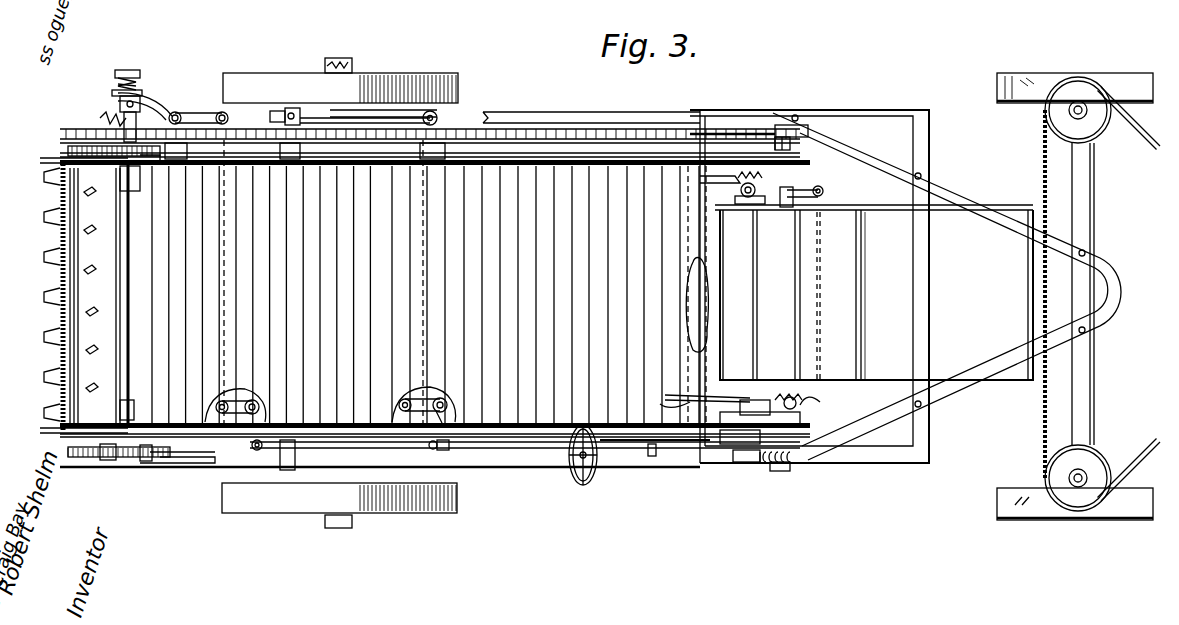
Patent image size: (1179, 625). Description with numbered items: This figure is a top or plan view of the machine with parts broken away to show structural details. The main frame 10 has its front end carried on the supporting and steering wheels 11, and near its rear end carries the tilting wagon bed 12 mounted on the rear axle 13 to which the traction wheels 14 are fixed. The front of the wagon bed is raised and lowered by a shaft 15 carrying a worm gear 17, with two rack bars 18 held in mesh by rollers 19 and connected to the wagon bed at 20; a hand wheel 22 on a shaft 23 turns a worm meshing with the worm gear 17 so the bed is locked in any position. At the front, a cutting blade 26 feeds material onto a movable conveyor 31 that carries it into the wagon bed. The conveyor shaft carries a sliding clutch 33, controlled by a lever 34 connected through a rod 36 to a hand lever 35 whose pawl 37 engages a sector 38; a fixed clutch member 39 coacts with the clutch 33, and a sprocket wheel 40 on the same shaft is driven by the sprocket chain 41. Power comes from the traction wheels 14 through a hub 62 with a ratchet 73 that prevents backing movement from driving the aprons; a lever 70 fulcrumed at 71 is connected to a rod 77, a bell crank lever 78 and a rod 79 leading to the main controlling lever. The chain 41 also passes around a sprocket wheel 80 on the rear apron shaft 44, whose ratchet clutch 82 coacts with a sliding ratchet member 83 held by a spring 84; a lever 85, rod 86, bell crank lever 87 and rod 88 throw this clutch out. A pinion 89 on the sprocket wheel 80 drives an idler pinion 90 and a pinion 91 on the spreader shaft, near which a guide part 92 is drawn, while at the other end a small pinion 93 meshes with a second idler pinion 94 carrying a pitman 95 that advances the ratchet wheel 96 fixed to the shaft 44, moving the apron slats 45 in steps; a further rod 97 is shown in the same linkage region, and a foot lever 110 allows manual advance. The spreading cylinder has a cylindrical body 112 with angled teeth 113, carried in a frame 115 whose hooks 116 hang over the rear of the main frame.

The main frame 10 is at (596, 115).
The supporting and steering wheels 11 is at (1078, 296).
The tilting wagon bed 12 is at (561, 166).
The rear axle 13 is at (336, 530).
The traction wheels 14 is at (340, 293).
The shaft 15 is at (790, 145).
The worm gear 17 is at (766, 462).
The rack bars 18 is at (742, 456).
The rollers 19 is at (762, 400).
The connection point of rack bars to wagon bed 20 is at (726, 442).
The hand wheel 22 is at (583, 488).
The shaft 23 is at (684, 455).
The cutting blade 26 is at (876, 295).
The movable conveyor 31 is at (864, 338).
The clutch 33 is at (740, 190).
The lever 34 is at (822, 195).
The hand lever 35 is at (672, 392).
The rod 36 is at (832, 208).
The pawl 37 is at (677, 400).
The sector 38 is at (805, 405).
The clutch member 39 is at (782, 125).
The sprocket wheel 40 is at (843, 136).
The sprocket chain 41 is at (722, 128).
The rear apron shaft 44 is at (125, 75).
The apron slats 45 is at (435, 283).
The hub 62 is at (330, 62).
The lever 70 is at (412, 115).
The fulcrum 71 is at (290, 112).
The ratchet 73 is at (358, 66).
The rod 77 is at (450, 120).
The bell crank lever 78 is at (416, 410).
The rod 79 is at (526, 445).
The sprocket wheel 80 is at (88, 134).
The ratchet clutch 82 is at (112, 125).
The sliding ratchet member 83 is at (115, 92).
The spring 84 is at (138, 88).
The lever 85 is at (160, 112).
The rod 86 is at (228, 145).
The bell crank lever 87 is at (240, 412).
The rod 88 is at (262, 450).
The pinion 89 is at (150, 163).
The idler pinion 90 is at (118, 160).
The pinion 91 is at (72, 150).
The guide 92 is at (740, 205).
The small pinion 93 is at (92, 458).
The second idler pinion 94 is at (114, 458).
The pitman 95 is at (167, 462).
The ratchet wheel 96 is at (145, 462).
The rod 97 is at (215, 457).
The foot lever 110 is at (652, 442).
The cylindrical body portion 112 is at (93, 289).
The teeth 113 is at (90, 323).
The frame 115 is at (118, 245).
The hooks 116 is at (125, 412).